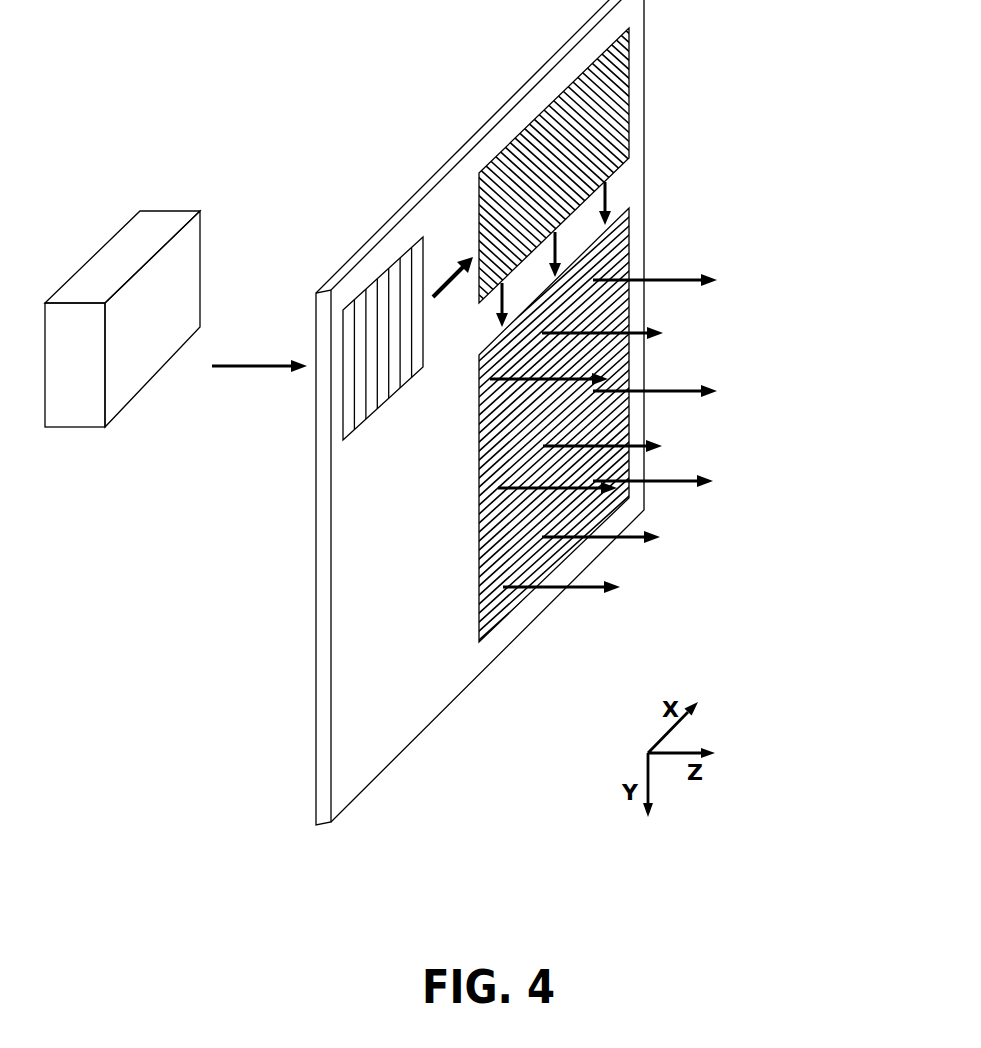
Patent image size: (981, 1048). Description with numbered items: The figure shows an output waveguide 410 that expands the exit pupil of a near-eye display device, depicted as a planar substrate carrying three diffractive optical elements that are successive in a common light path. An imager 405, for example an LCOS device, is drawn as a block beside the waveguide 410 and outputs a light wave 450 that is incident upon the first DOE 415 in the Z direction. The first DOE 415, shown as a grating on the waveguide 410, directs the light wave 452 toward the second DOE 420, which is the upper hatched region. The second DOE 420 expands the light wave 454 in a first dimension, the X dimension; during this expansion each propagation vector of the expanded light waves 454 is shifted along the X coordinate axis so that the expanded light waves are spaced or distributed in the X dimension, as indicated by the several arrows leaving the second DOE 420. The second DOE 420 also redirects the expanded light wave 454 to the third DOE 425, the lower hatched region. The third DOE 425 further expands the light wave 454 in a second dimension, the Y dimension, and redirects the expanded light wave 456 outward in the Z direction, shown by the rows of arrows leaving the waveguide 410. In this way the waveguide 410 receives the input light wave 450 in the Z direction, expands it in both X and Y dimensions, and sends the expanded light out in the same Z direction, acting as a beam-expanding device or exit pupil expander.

The imager 405 is at (158, 214).
The waveguide 410 is at (323, 622).
The first DOE 415 is at (347, 393).
The second DOE 420 is at (619, 103).
The third DOE 425 is at (487, 510).
The light wave 450 is at (227, 364).
The light wave 452 is at (447, 292).
The expanded light wave 454 is at (608, 200).
The expanded light wave 456 is at (586, 590).